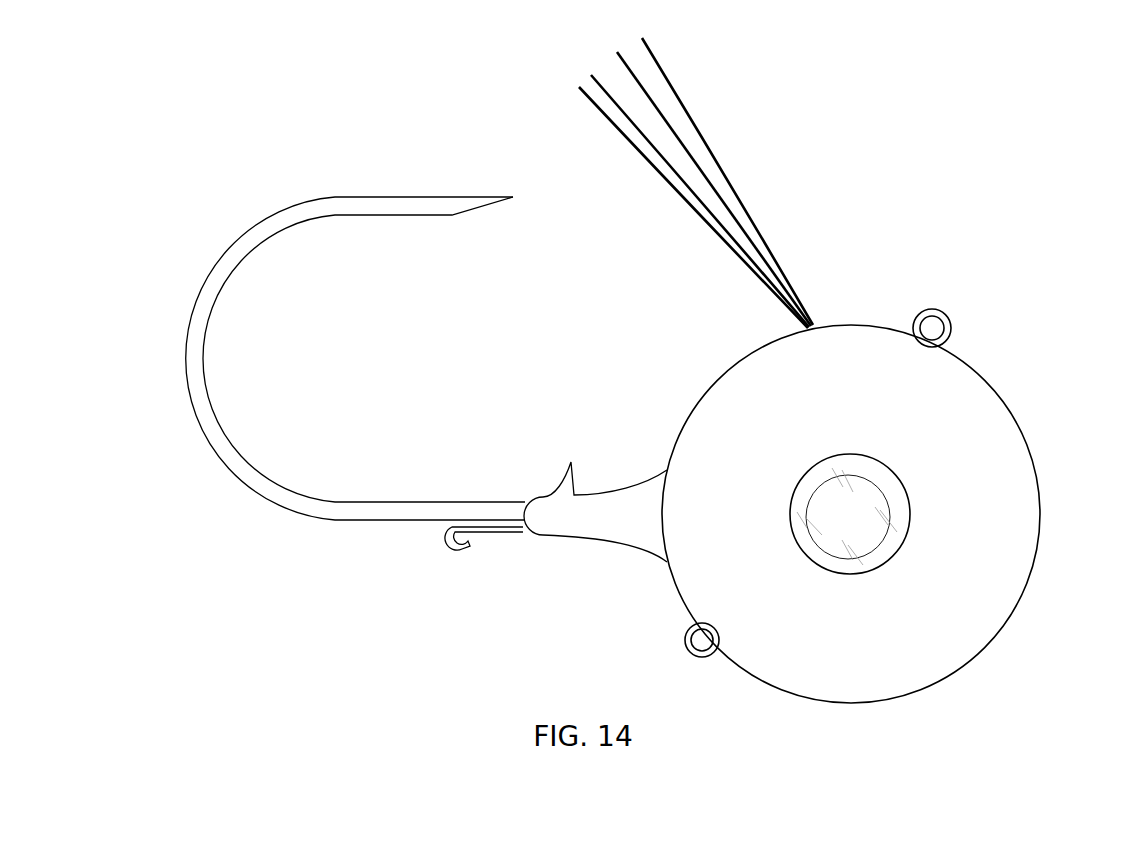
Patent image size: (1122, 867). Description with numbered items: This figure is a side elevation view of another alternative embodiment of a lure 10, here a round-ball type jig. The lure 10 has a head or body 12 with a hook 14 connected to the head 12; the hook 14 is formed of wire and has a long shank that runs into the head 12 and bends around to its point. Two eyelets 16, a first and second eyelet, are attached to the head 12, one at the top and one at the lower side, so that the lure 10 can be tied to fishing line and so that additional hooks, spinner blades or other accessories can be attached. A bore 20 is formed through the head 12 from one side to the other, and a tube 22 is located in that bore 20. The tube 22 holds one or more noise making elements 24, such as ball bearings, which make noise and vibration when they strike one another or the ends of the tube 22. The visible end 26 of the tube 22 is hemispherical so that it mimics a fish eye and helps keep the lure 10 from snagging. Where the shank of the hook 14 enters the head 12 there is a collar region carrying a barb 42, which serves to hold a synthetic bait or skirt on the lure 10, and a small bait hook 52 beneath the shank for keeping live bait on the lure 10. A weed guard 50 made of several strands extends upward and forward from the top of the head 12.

The lure 10 is at (649, 379).
The head 12 is at (997, 633).
The hook 14 is at (267, 212).
The eyelet 16 is at (952, 327).
The bore 20 is at (912, 515).
The tube 22 is at (887, 545).
The noise making elements 24 is at (832, 548).
The end of the tube 26 is at (875, 478).
The barb 42 is at (571, 462).
The weed guard 50 is at (738, 148).
The bait keeper barb 52 is at (452, 550).